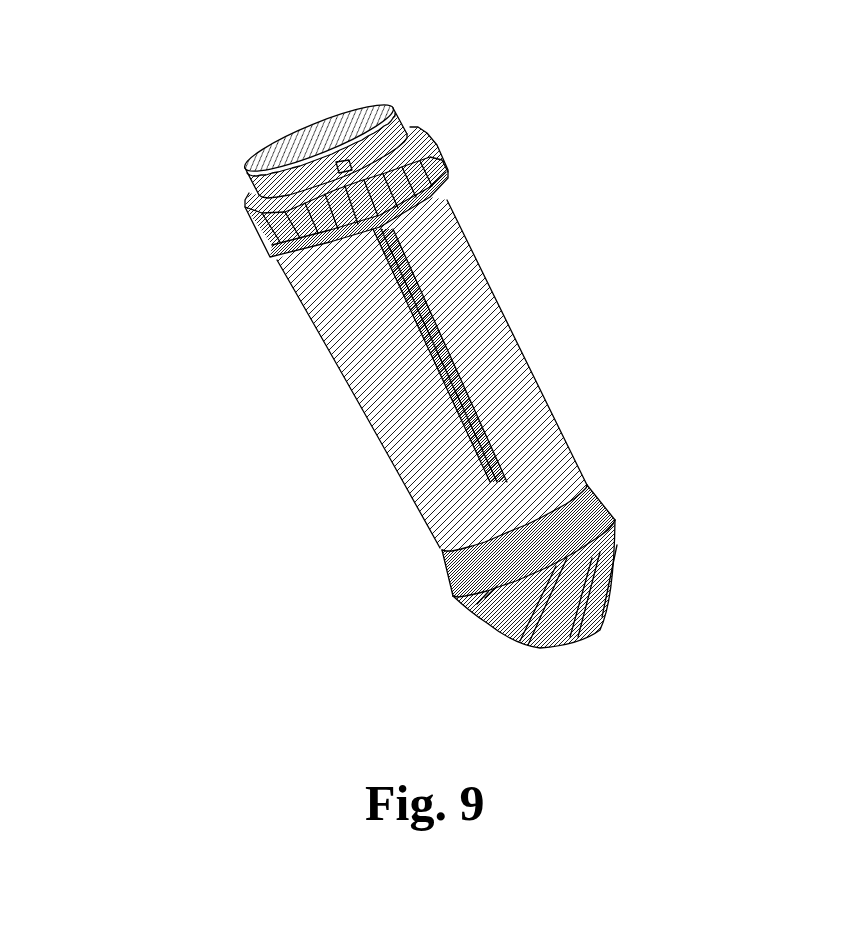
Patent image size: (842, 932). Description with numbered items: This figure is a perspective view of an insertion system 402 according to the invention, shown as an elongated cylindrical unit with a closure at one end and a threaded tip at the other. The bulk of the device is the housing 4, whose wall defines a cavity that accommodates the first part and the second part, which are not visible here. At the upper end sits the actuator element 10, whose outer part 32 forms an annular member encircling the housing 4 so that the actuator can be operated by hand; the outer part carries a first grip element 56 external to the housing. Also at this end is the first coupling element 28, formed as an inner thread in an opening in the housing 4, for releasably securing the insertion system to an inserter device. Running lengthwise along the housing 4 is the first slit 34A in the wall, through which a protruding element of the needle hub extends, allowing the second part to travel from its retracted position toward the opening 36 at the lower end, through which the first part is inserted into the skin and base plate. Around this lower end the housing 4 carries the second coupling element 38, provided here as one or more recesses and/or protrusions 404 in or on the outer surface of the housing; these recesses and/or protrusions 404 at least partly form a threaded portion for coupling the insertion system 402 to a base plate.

The insertion system 402 is at (403, 374).
The first coupling element 28 is at (340, 167).
The actuator element 10 is at (397, 159).
The outer part 32 is at (400, 190).
The first grip element 56 is at (436, 173).
The housing 4 is at (442, 374).
The first slit 34A is at (418, 328).
The recesses and/or protrusions 404 is at (600, 568).
The second coupling element 38 is at (594, 602).
The opening 36 is at (602, 602).